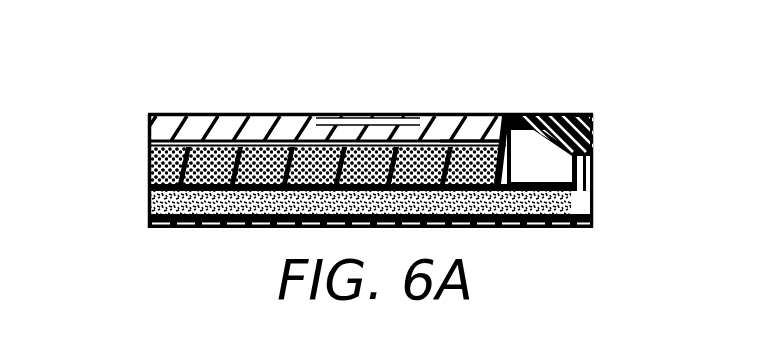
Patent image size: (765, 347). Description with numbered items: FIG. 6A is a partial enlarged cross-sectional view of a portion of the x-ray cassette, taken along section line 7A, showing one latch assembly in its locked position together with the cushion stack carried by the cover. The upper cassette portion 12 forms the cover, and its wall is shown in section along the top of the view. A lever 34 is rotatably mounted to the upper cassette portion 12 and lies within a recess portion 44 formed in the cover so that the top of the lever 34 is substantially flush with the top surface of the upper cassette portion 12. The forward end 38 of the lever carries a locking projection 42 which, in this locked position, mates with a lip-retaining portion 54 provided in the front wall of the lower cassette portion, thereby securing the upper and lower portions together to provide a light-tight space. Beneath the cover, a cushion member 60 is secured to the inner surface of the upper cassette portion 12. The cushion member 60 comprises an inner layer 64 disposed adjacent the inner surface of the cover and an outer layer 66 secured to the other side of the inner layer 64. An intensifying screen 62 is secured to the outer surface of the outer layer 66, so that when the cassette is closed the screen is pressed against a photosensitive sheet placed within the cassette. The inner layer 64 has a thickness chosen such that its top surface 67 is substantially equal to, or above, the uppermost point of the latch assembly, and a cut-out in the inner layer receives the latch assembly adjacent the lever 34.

The section line 7A- 7A is at (607, 104).
The upper cassette portion 12 is at (192, 115).
The lever 34 is at (462, 114).
The forward end 38 is at (557, 114).
The locking projection 42 is at (584, 135).
The recess portion 44 is at (357, 114).
The lip-retaining portion 54 is at (594, 130).
The cushion member 60 is at (316, 150).
The intensifying screen 62 is at (188, 229).
The inner layer 64 is at (150, 164).
The outer layer 66 is at (151, 200).
The top surface 67 is at (541, 156).